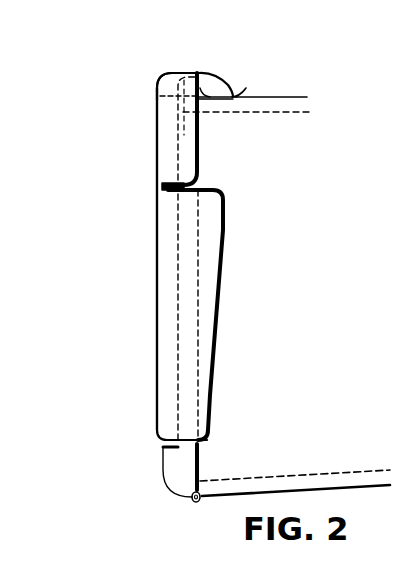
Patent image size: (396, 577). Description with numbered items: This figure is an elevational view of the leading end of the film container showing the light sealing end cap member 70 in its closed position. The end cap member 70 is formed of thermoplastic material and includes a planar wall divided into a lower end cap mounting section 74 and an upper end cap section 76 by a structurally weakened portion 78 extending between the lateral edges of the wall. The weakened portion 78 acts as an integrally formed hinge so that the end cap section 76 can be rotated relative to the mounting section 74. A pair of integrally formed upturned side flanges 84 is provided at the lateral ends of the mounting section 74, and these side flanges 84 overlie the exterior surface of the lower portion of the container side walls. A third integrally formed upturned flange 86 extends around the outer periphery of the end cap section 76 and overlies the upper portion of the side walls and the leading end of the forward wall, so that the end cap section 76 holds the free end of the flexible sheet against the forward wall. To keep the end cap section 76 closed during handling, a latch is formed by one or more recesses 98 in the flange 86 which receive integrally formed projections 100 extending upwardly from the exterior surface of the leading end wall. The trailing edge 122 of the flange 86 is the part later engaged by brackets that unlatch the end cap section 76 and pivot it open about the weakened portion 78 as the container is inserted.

The end cap member 70 is at (148, 130).
The lower end cap mounting section 74 is at (155, 386).
The upper end cap section 76 is at (156, 107).
The structurally weakened portion 78 is at (160, 187).
The upturned side flanges 84 is at (213, 262).
The third upturned flange 86 is at (178, 75).
The recesses 98 is at (201, 76).
The projections 100 is at (201, 102).
The trailing edge 122 is at (200, 153).